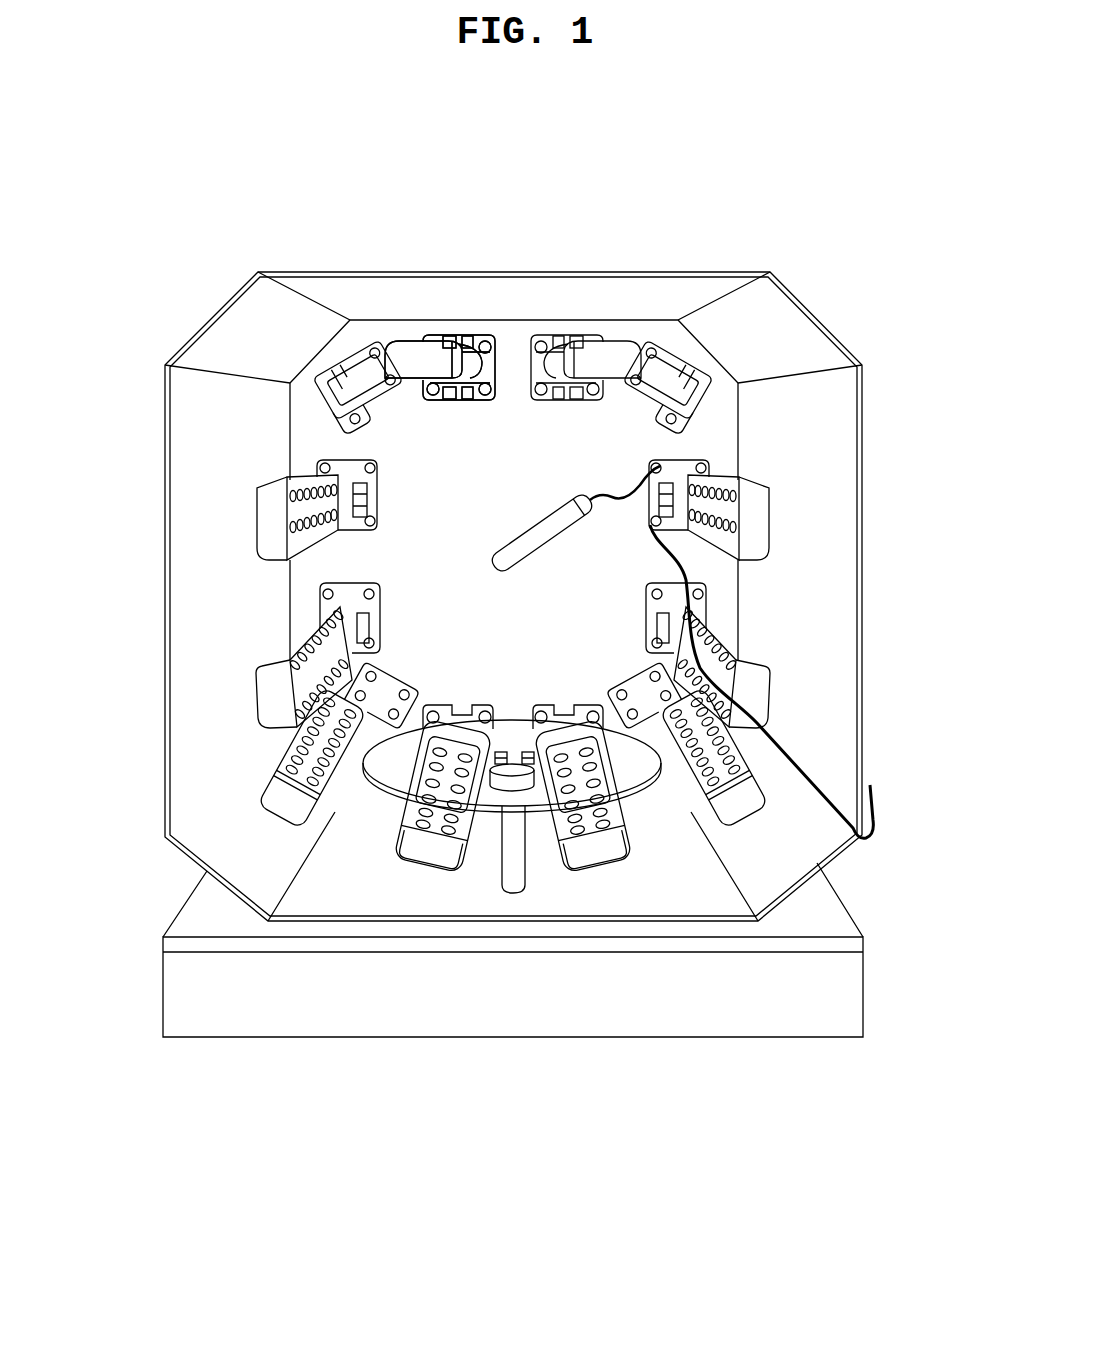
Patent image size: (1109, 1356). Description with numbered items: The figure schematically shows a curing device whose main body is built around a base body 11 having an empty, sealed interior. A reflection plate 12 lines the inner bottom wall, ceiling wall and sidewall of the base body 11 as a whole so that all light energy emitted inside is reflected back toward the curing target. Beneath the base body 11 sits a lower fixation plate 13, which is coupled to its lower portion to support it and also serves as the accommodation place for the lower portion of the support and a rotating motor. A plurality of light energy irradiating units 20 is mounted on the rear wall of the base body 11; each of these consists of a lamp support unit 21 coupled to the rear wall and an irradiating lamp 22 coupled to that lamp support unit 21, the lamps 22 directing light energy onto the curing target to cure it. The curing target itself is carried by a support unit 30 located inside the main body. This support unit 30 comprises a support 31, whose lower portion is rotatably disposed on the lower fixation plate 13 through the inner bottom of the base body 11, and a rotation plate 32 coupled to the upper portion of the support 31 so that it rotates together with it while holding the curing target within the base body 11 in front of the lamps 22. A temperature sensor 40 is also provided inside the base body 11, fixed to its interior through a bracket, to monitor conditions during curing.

The base body 11 is at (793, 878).
The reflection plate 12 is at (317, 283).
The lower fixation plate 13 is at (832, 997).
The light energy irradiating unit 20 is at (520, 506).
The lamp support unit 21 is at (345, 382).
The irradiating lamp 22 is at (413, 357).
The support unit 30 is at (506, 976).
The support 31 is at (512, 857).
The rotation plate 32 is at (397, 772).
The temperature sensor 40 is at (540, 533).